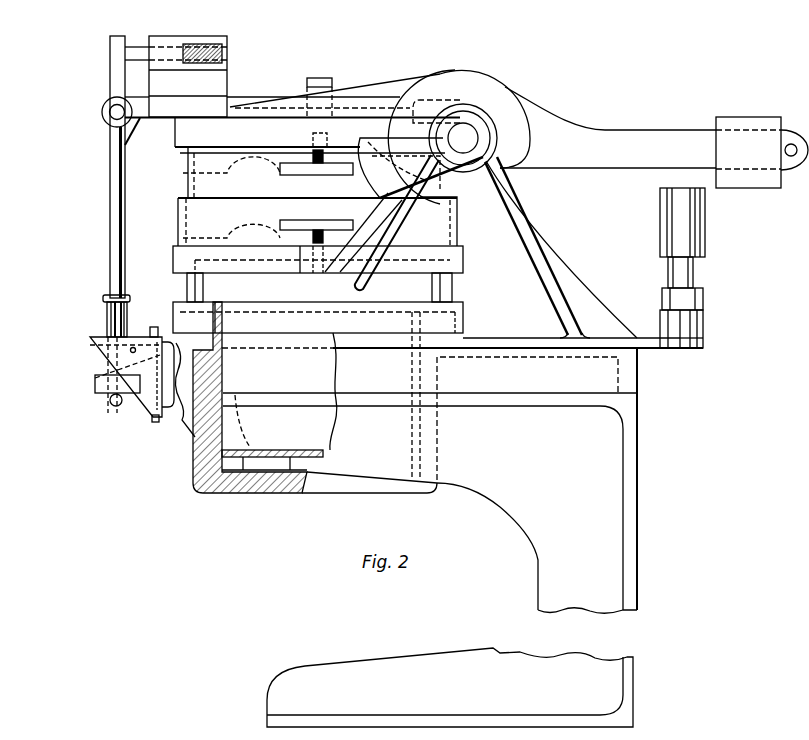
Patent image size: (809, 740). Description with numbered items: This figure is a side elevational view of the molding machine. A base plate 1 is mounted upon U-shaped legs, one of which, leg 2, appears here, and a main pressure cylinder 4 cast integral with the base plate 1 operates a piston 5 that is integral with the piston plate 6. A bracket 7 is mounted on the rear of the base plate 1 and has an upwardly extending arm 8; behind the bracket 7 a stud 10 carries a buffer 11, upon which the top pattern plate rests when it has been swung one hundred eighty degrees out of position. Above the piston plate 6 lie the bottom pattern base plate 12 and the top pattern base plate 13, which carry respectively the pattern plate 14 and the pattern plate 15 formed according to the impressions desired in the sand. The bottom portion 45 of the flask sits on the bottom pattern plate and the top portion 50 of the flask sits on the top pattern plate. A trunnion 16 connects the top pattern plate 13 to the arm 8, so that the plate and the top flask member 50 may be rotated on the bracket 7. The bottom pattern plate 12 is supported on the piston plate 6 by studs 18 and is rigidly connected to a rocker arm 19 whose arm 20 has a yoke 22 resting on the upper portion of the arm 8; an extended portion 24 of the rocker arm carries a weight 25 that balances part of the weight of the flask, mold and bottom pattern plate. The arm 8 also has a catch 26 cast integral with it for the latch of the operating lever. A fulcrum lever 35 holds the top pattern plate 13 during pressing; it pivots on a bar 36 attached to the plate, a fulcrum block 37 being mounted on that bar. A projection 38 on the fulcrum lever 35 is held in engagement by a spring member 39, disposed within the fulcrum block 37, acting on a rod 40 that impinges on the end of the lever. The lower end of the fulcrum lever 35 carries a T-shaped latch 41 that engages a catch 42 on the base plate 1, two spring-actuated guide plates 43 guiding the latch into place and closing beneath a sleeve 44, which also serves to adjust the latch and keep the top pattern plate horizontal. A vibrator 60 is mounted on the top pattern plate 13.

The base plate 1 is at (637, 393).
The U-shaped leg 2 is at (637, 515).
The main pressure cylinder 4 is at (277, 487).
The piston 5 is at (193, 475).
The piston plate 6 is at (463, 313).
The bracket 7 is at (639, 338).
The arm 8 is at (567, 272).
The stud 10 is at (668, 280).
The buffer 11 is at (660, 227).
The bottom pattern base plate 12 is at (463, 258).
The top pattern base plate 13 is at (175, 136).
The pattern plate 14 is at (173, 243).
The pattern plate 15 is at (176, 152).
The trunnion 16 is at (388, 80).
The stud 18 is at (203, 287).
The rocker arm 19 is at (323, 278).
The arm 20 is at (448, 187).
The yoke 22 is at (482, 78).
The extended portion 24 is at (623, 128).
The weight 25 is at (753, 118).
The catch 26 is at (367, 180).
The fulcrum lever 35 is at (108, 222).
The bar 36 is at (103, 100).
The fulcrum block 37 is at (229, 57).
The projection 38 is at (124, 134).
The spring member 39 is at (202, 43).
The rod 40 is at (131, 46).
The T-shaped latch 41 is at (117, 407).
The catch 42 is at (97, 393).
The guide plate 43 is at (93, 347).
The sleeve 44 is at (128, 308).
The bottom portion of the flask 45 is at (457, 217).
The top portion of the flask 50 is at (173, 183).
The vibrator 60 is at (332, 78).